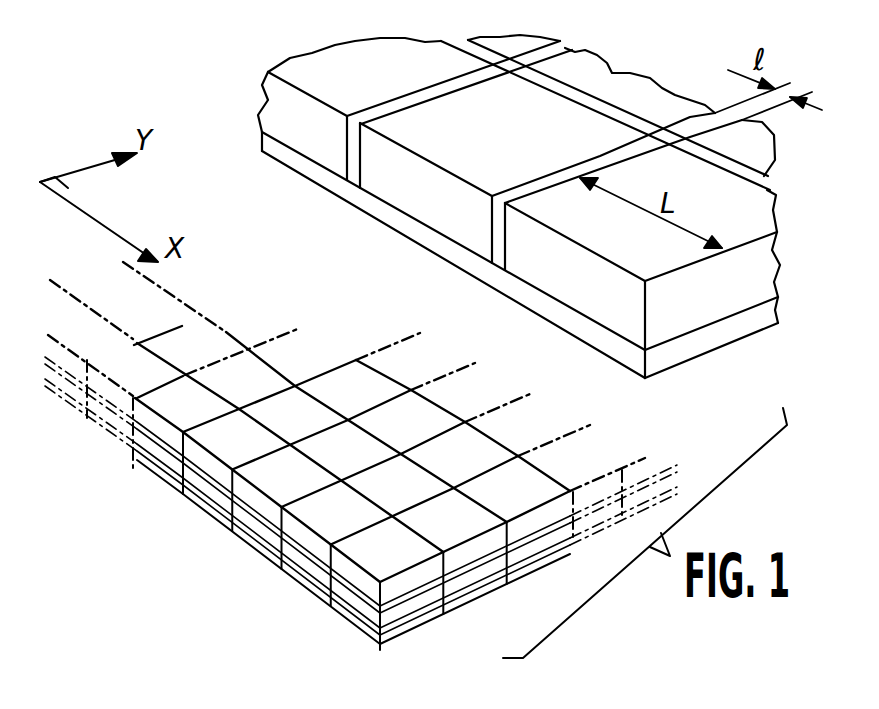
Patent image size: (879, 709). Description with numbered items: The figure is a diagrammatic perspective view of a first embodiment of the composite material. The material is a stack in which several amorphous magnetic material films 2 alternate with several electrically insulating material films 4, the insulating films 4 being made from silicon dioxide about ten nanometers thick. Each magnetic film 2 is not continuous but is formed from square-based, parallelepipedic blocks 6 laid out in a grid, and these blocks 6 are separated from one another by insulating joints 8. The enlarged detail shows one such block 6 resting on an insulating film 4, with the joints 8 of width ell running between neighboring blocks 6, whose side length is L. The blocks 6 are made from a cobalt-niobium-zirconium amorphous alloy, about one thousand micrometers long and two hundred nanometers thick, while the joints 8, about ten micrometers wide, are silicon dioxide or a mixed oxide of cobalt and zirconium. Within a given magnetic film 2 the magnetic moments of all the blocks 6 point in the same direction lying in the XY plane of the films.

The amorphous magnetic material film 2 is at (183, 449).
The electrically insulating material film 4 is at (557, 310).
The parallelepipedic block 6 is at (590, 127).
The insulating joint 8 is at (350, 183).